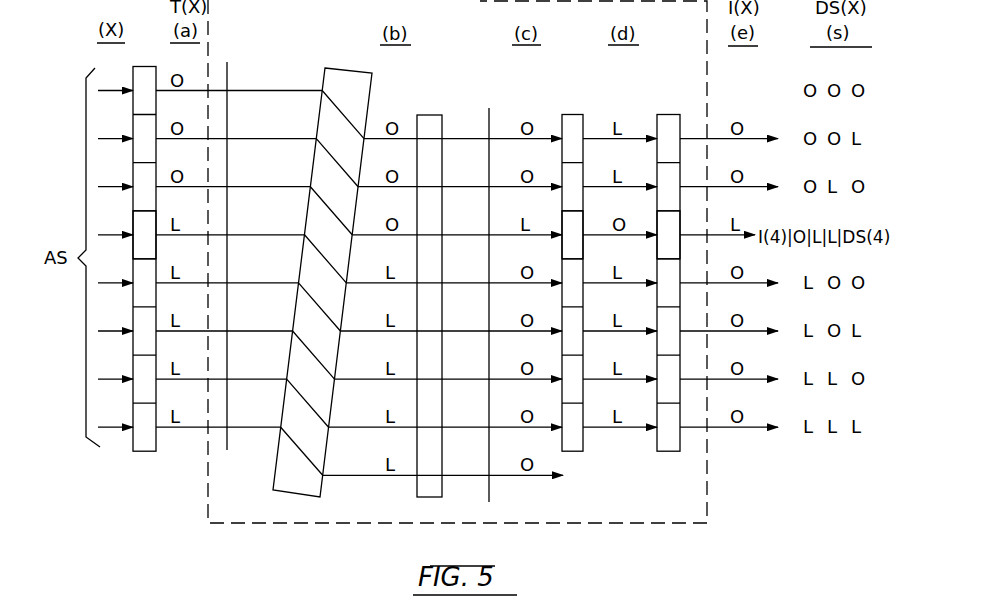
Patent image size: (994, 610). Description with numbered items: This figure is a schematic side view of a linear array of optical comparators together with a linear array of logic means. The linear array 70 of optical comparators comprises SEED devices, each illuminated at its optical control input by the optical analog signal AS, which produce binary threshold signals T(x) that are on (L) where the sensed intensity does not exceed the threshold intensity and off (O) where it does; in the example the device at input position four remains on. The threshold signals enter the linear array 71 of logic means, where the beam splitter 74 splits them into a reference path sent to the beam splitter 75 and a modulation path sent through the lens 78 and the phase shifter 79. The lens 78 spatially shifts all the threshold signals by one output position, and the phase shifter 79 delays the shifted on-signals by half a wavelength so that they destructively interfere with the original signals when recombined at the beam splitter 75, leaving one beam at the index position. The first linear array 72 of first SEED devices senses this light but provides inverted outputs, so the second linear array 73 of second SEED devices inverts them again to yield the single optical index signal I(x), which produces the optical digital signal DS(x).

The linear array of optical comparators 70 is at (146, 452).
The linear array of logic means 71 is at (710, 494).
The first linear array of first SEED devices 72 is at (573, 452).
The second linear array of second SEED devices 73 is at (669, 452).
The optical beam splitter 74 is at (228, 80).
The optical beam splitter 75 is at (490, 490).
The lens 78 is at (283, 491).
The optical phase shifter 79 is at (418, 489).